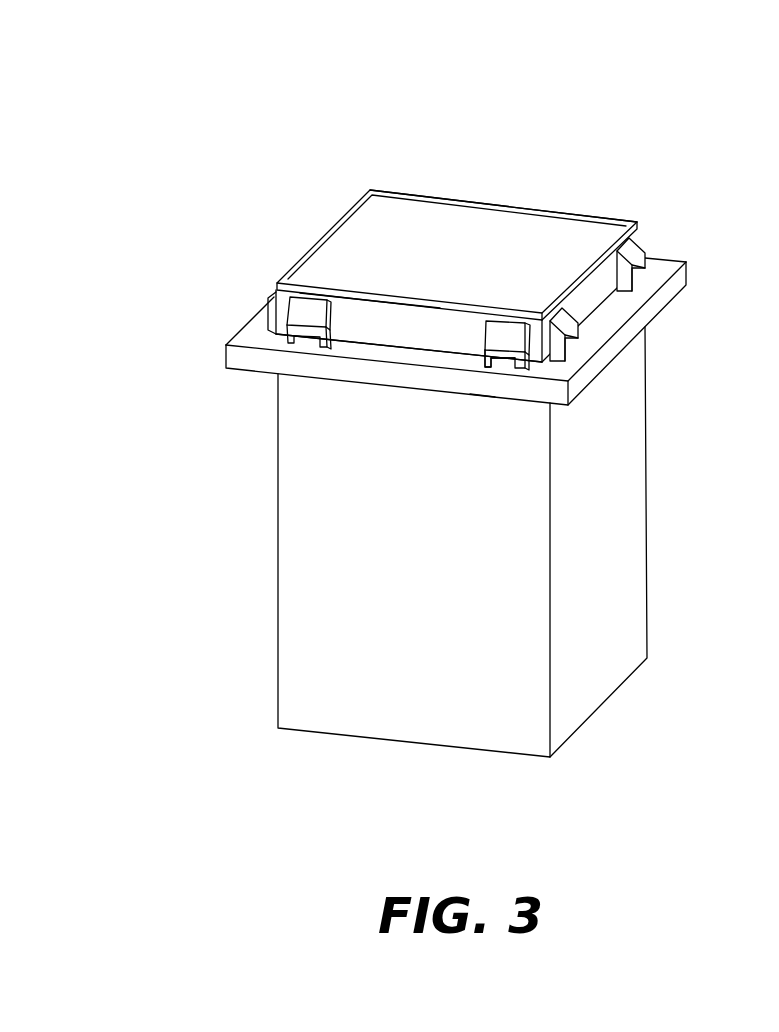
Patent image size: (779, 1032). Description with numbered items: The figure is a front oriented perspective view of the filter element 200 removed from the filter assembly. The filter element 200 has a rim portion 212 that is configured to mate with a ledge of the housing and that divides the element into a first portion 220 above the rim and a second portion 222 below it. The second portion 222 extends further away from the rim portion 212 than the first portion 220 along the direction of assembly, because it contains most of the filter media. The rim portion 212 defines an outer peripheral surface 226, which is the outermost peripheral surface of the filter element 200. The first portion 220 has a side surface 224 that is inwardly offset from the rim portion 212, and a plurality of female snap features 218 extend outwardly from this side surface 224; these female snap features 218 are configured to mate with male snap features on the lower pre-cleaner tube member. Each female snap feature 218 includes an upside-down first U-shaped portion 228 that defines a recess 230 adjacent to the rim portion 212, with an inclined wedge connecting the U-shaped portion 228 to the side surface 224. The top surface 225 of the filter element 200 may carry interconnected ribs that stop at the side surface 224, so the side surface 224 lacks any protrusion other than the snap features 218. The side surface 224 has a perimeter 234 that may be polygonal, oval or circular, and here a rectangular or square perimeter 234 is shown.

The filter element 200 is at (510, 104).
The rim portion 212 is at (654, 312).
The female snap feature 218 is at (698, 190).
The first portion 220 is at (372, 324).
The second portion 222 is at (603, 586).
The side surface 224 is at (431, 338).
The top surface 225 is at (350, 208).
The outer peripheral surface 226 is at (481, 392).
The first U-shaped portion 228 is at (487, 361).
The recess 230 is at (500, 365).
The perimeter 234 is at (371, 288).